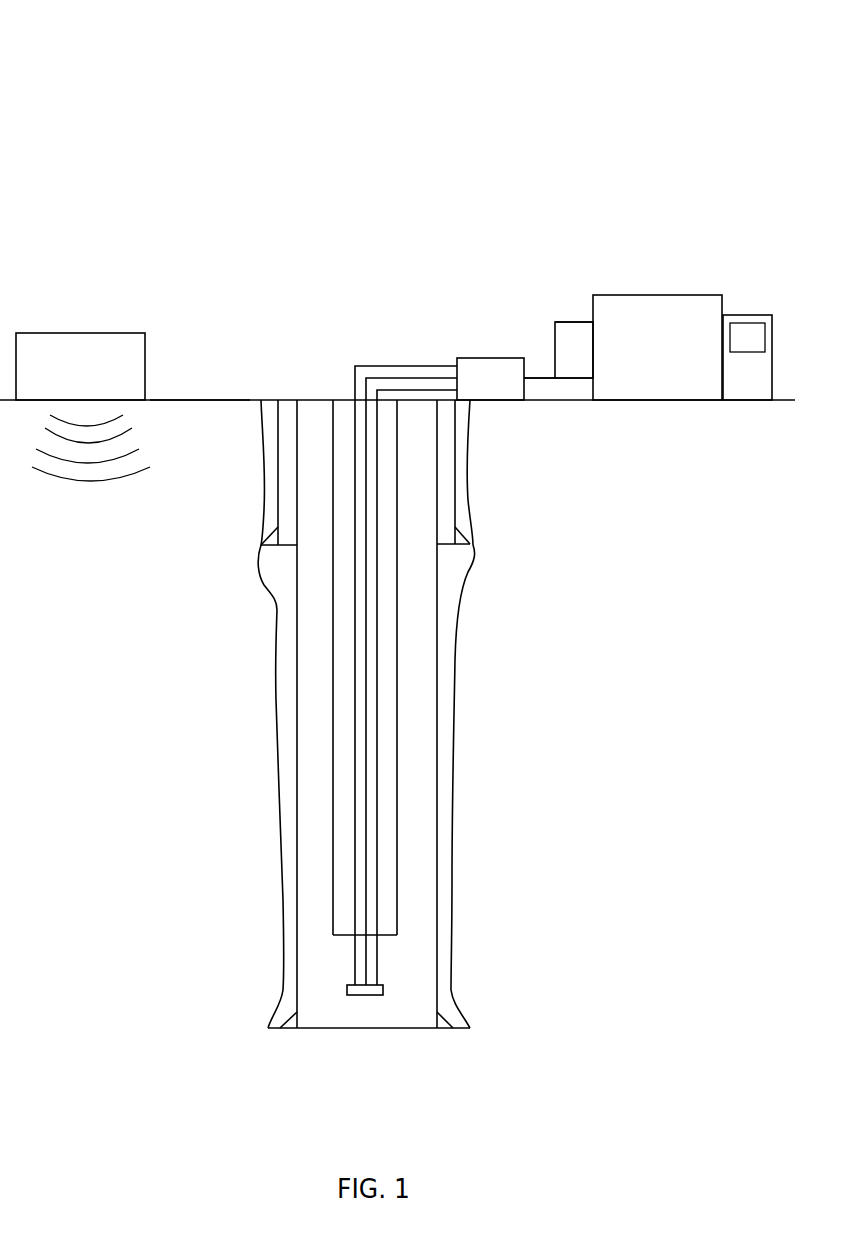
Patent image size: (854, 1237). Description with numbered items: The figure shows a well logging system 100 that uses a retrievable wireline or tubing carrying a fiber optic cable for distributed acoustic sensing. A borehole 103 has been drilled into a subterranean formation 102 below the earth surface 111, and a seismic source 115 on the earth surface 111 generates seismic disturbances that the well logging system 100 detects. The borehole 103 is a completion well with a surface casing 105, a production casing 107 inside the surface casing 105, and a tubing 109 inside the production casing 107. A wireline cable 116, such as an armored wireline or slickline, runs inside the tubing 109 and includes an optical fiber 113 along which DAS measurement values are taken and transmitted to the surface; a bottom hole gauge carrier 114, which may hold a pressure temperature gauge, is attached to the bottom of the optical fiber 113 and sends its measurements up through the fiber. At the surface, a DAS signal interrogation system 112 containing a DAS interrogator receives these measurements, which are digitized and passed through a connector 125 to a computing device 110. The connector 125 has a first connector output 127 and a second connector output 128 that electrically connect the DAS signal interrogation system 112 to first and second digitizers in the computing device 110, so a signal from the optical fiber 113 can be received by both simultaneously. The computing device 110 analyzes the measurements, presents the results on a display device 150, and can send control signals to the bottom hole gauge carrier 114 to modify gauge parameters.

The well logging system 100 is at (148, 95).
The subterranean formation 102 is at (733, 532).
The borehole 103 is at (277, 628).
The surface casing 105 is at (455, 487).
The production casing 107 is at (437, 601).
The tubing 109 is at (397, 661).
The computing device 110 is at (673, 358).
The earth surface 111 is at (175, 400).
The DAS signal interrogation system 112 is at (507, 395).
The optical fiber 113 is at (366, 473).
The bottom hole gauge carrier 114 is at (383, 990).
The seismic source 115 is at (97, 375).
The wireline cable 116 is at (377, 737).
The connector 125 is at (537, 378).
The first connector output 127 is at (566, 378).
The second connector output 128 is at (585, 322).
The display device 150 is at (747, 323).